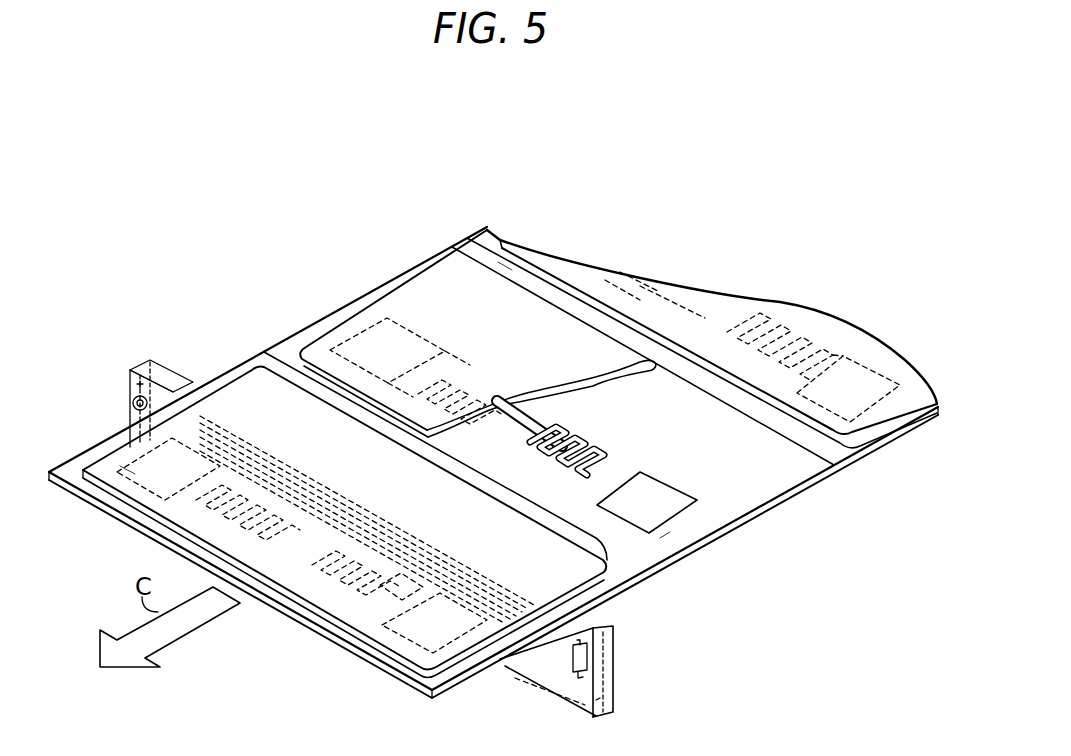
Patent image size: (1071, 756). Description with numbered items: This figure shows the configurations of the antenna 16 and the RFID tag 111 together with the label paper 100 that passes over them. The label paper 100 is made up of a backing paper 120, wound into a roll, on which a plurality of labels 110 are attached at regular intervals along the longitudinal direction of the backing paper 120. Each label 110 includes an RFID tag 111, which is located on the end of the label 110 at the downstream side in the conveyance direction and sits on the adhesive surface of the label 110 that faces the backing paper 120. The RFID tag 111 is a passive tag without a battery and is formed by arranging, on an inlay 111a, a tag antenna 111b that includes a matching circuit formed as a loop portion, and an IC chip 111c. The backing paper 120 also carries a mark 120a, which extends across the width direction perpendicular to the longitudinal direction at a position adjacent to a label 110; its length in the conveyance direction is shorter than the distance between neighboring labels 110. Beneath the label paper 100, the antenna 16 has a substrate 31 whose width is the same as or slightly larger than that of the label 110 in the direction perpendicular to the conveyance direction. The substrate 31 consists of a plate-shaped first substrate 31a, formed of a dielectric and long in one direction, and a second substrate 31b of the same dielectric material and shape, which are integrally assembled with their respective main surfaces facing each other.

The label paper 100 is at (606, 128).
The label 110 is at (441, 279).
The backing paper 120 is at (866, 345).
The mark 120a is at (506, 268).
The RFID tag 111 is at (712, 485).
The inlay 111a is at (690, 524).
The tag antenna 111b is at (119, 456).
The IC chip 111c is at (531, 404).
The substrate 31 is at (748, 691).
The first substrate 31a is at (610, 669).
The second substrate 31b is at (601, 697).
The antenna 16 is at (107, 351).